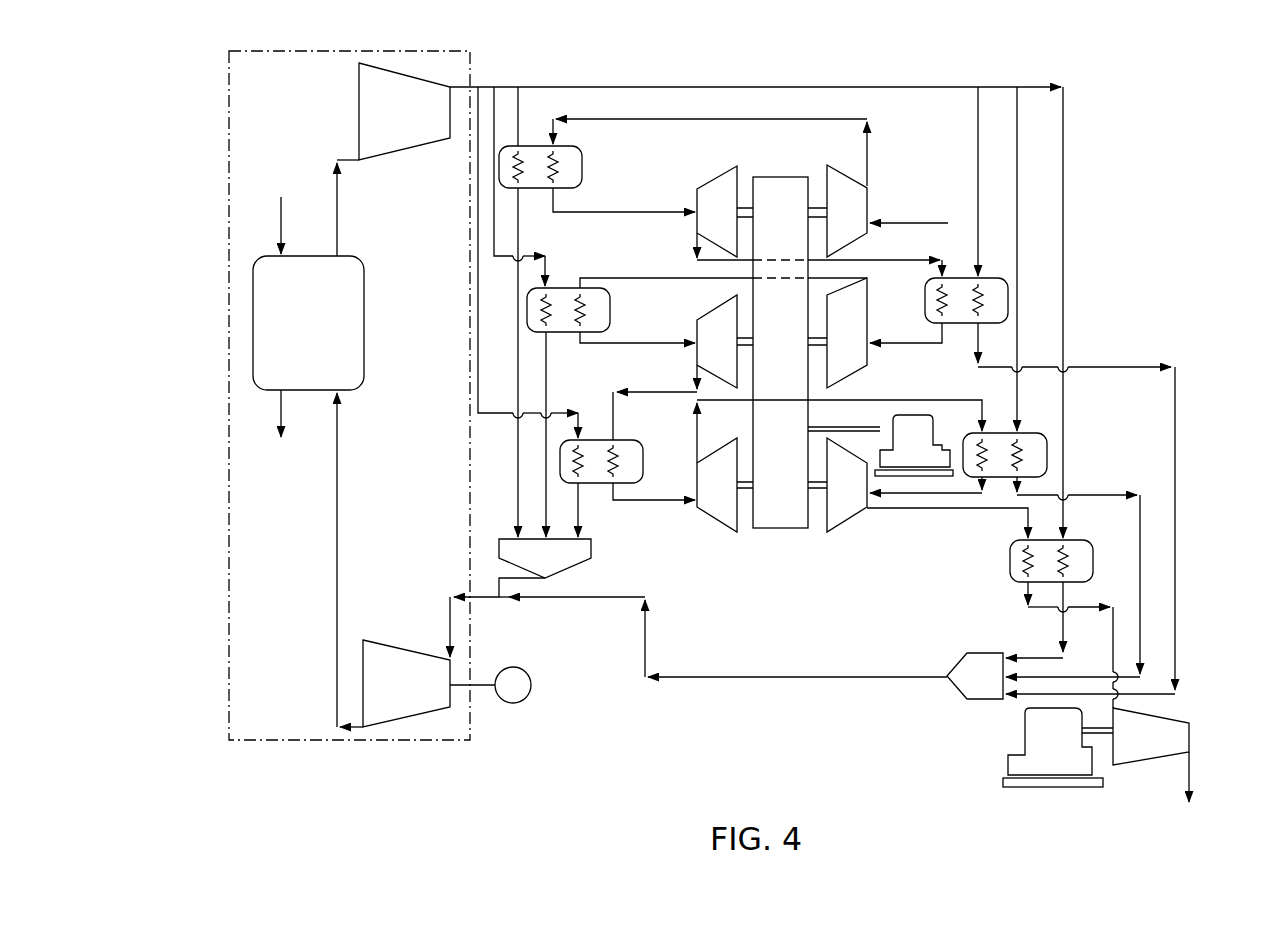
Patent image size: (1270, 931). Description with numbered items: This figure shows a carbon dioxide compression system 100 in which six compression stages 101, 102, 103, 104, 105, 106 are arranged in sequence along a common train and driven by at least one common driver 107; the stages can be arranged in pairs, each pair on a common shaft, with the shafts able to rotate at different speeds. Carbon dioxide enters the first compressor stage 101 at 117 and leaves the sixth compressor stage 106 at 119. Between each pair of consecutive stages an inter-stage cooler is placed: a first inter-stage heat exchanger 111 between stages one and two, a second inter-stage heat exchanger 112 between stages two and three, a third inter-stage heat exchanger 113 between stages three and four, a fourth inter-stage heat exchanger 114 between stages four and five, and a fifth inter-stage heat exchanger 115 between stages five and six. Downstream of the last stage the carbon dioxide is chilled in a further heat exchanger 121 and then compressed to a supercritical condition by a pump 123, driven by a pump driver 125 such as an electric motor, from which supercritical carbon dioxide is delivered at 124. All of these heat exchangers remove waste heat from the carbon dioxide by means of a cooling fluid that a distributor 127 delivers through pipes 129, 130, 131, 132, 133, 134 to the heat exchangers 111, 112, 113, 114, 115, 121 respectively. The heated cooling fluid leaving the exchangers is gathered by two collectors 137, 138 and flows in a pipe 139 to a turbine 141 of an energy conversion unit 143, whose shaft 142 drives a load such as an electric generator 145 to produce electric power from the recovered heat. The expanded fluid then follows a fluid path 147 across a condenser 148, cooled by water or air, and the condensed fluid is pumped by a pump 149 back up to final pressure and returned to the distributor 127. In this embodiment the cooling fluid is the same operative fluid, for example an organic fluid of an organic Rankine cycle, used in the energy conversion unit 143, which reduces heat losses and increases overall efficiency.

The carbon dioxide compression system 100 is at (1138, 104).
The first compressor stage 101 is at (838, 180).
The second compressor stage 102 is at (712, 184).
The third compressor stage 103 is at (852, 373).
The fourth compressor stage 104 is at (712, 316).
The fifth compressor stage 105 is at (706, 514).
The sixth compressor stage 106 is at (842, 516).
The common driver 107 is at (948, 424).
The first inter-stage heat exchanger 111 is at (583, 172).
The second inter-stage heat exchanger 112 is at (957, 286).
The third inter-stage heat exchanger 113 is at (570, 297).
The fourth inter-stage heat exchanger 114 is at (620, 440).
The fifth inter-stage heat exchanger 115 is at (1030, 440).
The carbon dioxide inlet 117 is at (907, 221).
The carbon dioxide outlet 119 is at (947, 511).
The further heat exchanger 121 is at (1009, 570).
The pump 123 is at (1170, 720).
The supercritical carbon dioxide delivery 124 is at (1191, 773).
The pump driver 125 is at (1024, 729).
The distributor 127 is at (598, 84).
The pipe 129 is at (519, 104).
The pipe 130 is at (976, 125).
The pipe 131 is at (514, 253).
The pipe 132 is at (486, 411).
The pipe 133 is at (1019, 210).
The pipe 134 is at (1065, 322).
The mixer 137 is at (586, 552).
The collector 138 is at (962, 665).
The pipe 139 is at (448, 605).
The turbine 141 is at (410, 656).
The shaft 142 is at (470, 684).
The energy conversion unit 143 is at (225, 608).
The electric generator 145 is at (532, 683).
The fluid path 147 is at (339, 222).
The condenser 148 is at (352, 306).
The pump 149 is at (359, 118).